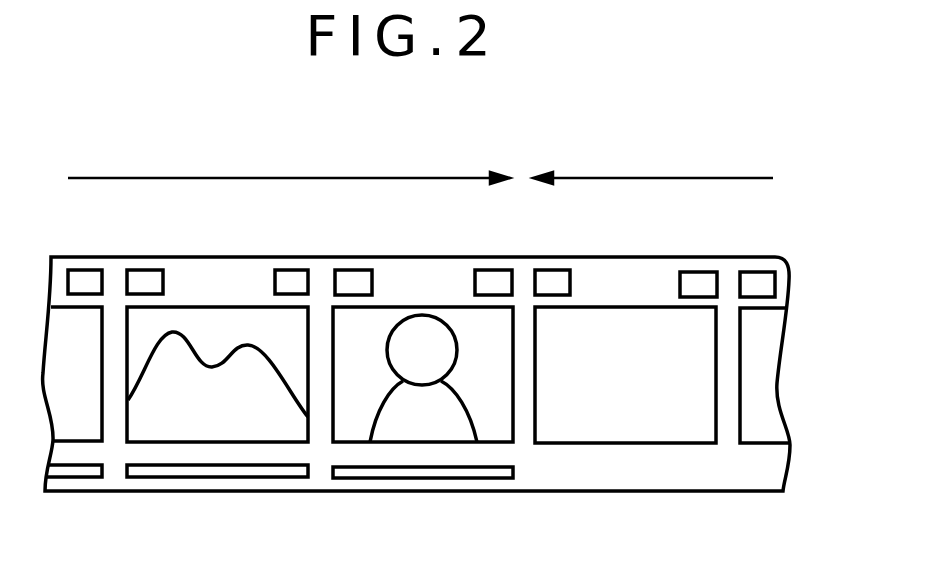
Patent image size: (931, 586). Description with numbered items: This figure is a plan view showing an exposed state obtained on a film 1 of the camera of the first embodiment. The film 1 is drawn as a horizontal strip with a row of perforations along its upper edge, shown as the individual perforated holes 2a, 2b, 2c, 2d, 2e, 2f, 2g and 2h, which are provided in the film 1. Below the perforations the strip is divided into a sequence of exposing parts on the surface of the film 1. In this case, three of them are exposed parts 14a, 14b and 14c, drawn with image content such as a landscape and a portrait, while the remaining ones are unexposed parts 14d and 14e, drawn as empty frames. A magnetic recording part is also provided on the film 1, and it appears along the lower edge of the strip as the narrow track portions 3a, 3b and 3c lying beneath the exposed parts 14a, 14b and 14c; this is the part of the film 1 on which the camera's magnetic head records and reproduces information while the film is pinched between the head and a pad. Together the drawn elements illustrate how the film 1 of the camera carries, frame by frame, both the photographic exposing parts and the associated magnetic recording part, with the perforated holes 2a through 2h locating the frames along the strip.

The film 1 is at (219, 285).
The perforated hole 2a is at (84, 270).
The perforated hole 2b is at (148, 270).
The perforated hole 2c is at (290, 270).
The perforated hole 2d is at (355, 270).
The perforated hole 2e is at (497, 270).
The perforated hole 2f is at (553, 270).
The perforated hole 2g is at (699, 272).
The perforated hole 2h is at (757, 272).
The magnetic recording part 3a is at (85, 472).
The magnetic recording part 3b is at (242, 472).
The magnetic recording part 3c is at (458, 473).
The exposed part 14a is at (68, 443).
The exposed part 14b is at (162, 443).
The exposed part 14c is at (355, 443).
The unexposed part 14d is at (573, 445).
The unexposed part 14e is at (752, 445).